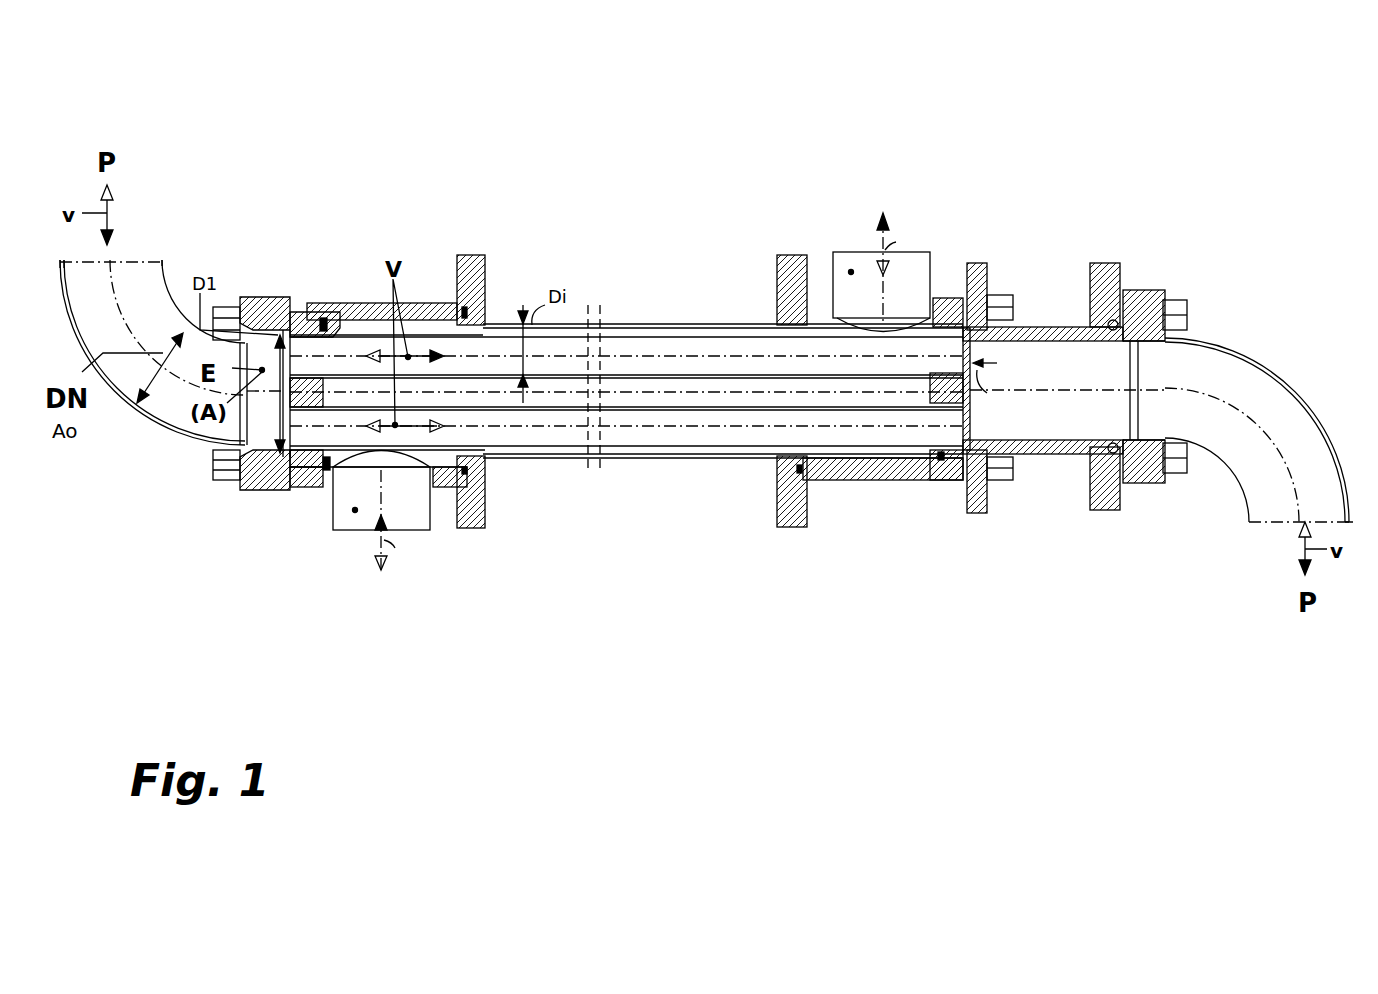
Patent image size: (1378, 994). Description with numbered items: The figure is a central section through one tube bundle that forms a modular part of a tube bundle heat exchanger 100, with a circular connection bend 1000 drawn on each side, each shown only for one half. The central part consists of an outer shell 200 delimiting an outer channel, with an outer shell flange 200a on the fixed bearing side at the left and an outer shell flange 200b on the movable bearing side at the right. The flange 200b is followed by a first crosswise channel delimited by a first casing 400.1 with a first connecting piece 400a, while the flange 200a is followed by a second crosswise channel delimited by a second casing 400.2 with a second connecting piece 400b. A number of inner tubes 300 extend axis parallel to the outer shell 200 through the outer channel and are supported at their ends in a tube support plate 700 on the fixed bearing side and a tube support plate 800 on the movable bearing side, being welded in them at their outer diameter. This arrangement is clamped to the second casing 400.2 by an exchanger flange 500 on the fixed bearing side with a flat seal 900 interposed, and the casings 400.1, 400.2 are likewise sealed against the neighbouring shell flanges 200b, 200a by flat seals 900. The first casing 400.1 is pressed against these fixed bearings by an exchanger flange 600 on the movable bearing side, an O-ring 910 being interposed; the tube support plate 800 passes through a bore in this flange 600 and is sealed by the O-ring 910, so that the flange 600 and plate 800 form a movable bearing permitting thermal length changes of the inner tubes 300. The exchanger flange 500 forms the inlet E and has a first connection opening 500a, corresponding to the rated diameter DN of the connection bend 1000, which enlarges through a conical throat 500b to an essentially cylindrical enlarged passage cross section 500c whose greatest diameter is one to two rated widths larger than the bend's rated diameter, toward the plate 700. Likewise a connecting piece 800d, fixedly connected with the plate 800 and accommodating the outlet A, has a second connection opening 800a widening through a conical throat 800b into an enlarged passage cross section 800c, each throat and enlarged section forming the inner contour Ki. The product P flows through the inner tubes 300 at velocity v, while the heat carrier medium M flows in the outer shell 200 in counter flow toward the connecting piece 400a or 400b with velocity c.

The tube bundle heat exchanger 100 is at (602, 485).
The outer shell 200 is at (658, 457).
The outer shell flange 200a is at (472, 270).
The outer shell flange 200b is at (793, 268).
The inner tubes 300 is at (668, 357).
The first casing 400.1 is at (853, 472).
The second casing 400.2 is at (358, 310).
The first connecting piece 400a is at (931, 258).
The second connecting piece 400b is at (333, 530).
The exchanger flange 500 is at (277, 328).
The first connection opening 500a is at (238, 450).
The conical throat 500b is at (270, 310).
The enlarged passage cross section 500c is at (268, 460).
The exchanger flange 600 is at (975, 273).
The tube support plate 700 is at (311, 315).
The tube support plate 800 is at (952, 388).
The second connection opening 800a is at (1067, 388).
The conical throat 800b is at (987, 443).
The enlarged passage cross section 800c is at (993, 327).
The connecting piece 800d is at (1055, 332).
The flat seal 900 is at (322, 468).
The O-ring 910 is at (941, 460).
The connection bend 1000 is at (118, 380).